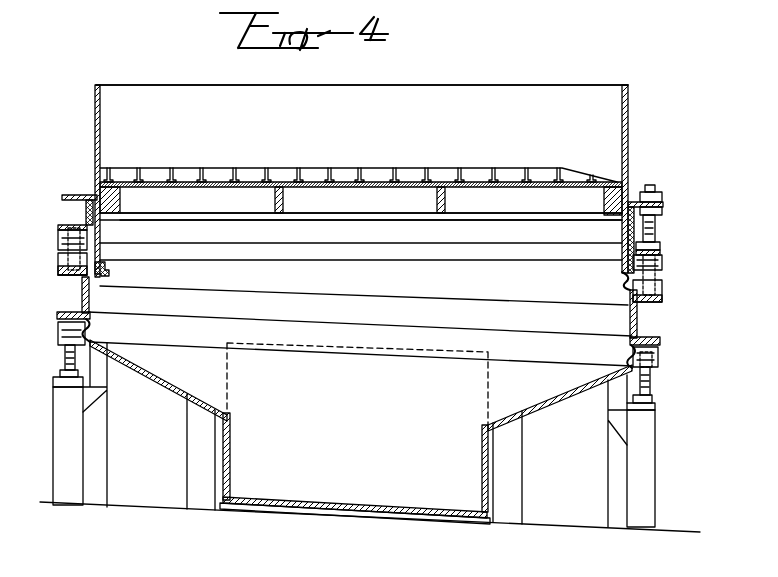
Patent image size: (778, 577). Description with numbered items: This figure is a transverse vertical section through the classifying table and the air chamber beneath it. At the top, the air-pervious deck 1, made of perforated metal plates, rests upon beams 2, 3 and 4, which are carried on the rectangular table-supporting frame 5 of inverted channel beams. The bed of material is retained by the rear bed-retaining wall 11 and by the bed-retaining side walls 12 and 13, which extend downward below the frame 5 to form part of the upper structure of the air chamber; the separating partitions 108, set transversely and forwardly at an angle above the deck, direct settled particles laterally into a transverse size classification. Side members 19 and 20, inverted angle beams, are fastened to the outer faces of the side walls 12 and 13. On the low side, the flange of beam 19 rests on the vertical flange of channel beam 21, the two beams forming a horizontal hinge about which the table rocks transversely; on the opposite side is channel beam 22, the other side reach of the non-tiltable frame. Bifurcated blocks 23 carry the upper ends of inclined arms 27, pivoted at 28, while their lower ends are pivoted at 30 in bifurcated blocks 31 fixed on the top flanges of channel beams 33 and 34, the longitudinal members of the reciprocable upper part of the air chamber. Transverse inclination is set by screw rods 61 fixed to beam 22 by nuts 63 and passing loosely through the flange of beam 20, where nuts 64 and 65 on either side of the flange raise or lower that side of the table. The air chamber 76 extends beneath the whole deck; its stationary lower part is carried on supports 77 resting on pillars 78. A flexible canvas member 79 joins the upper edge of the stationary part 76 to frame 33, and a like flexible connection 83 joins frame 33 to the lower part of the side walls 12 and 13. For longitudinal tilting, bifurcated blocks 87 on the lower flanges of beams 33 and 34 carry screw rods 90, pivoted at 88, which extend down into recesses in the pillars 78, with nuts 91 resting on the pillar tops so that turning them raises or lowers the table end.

The air-pervious deck 1 is at (352, 180).
The beam 2 is at (120, 201).
The beam 3 is at (283, 203).
The beam 4 is at (604, 205).
The table-supporting frame 5 is at (216, 232).
The rear bed-retaining wall 11 is at (300, 82).
The bed-retaining side wall 12 is at (96, 106).
The bed-retaining side wall 13 is at (628, 120).
The side member 19 is at (75, 195).
The side member 20 is at (639, 202).
The channel beam 21 is at (85, 213).
The channel beam 22 is at (660, 253).
The bifurcated block 23 is at (64, 230).
The arm 27 is at (68, 254).
The upper pivot 28 is at (58, 238).
The lower pivot 30 is at (60, 264).
The bifurcated block 31 is at (62, 275).
The channel beam 33 is at (85, 313).
The channel beam 34 is at (637, 331).
The screw rod 61 is at (655, 228).
The nut 63 is at (660, 245).
The nut 64 is at (660, 197).
The nut 65 is at (662, 212).
The air chamber 76 is at (482, 487).
The support 77 is at (102, 378).
The pillar 78 is at (70, 445).
The flexible member 79 is at (94, 336).
The flexible connection 83 is at (105, 278).
The bifurcated block 87 is at (660, 355).
The pivot 88 is at (60, 340).
The screw rod 90 is at (62, 368).
The nut 91 is at (62, 375).
The separating partition 108 is at (288, 168).